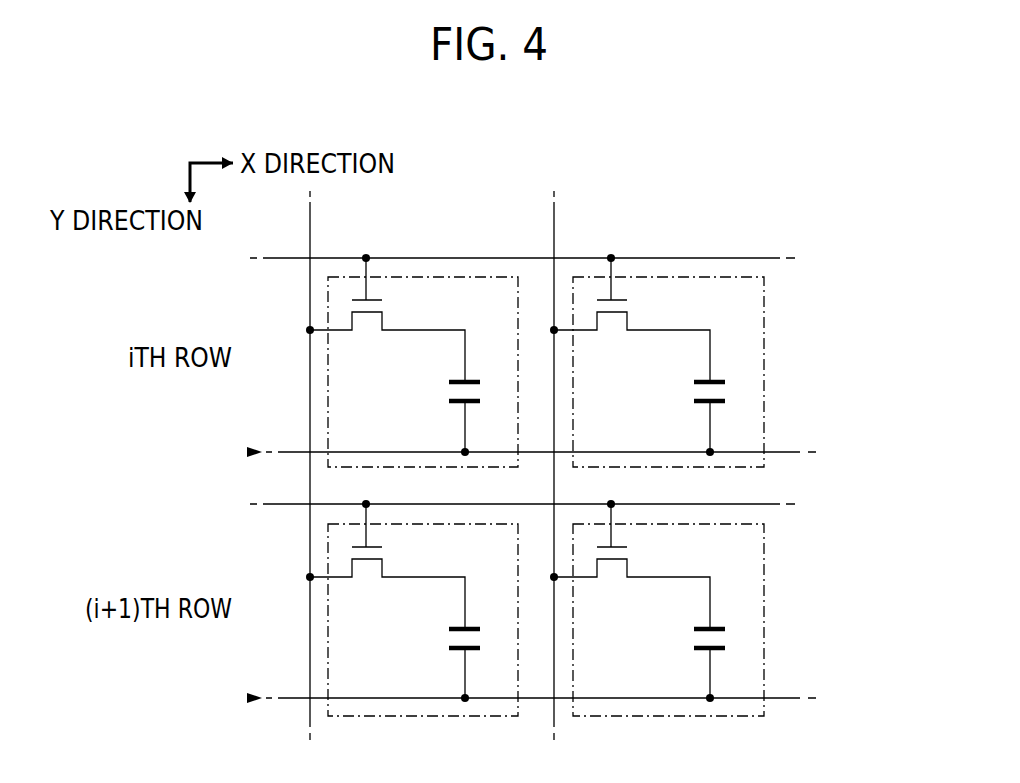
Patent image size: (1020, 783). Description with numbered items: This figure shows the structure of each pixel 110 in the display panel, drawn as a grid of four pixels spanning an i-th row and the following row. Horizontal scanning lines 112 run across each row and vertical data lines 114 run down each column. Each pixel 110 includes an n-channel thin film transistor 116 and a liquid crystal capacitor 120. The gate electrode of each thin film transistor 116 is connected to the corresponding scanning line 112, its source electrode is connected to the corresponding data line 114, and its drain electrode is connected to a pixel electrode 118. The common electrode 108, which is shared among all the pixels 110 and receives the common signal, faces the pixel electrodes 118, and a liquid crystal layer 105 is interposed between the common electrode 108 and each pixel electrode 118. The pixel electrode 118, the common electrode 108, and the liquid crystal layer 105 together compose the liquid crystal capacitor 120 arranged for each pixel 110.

The liquid crystal layer 105 is at (450, 389).
The common electrode 108 is at (292, 452).
The pixel 110 is at (476, 278).
The scanning line 112 is at (270, 258).
The data line 114 is at (310, 238).
The thin film transistor 116 is at (382, 318).
The pixel electrode 118 is at (456, 381).
The liquid crystal capacitor 120 is at (442, 409).